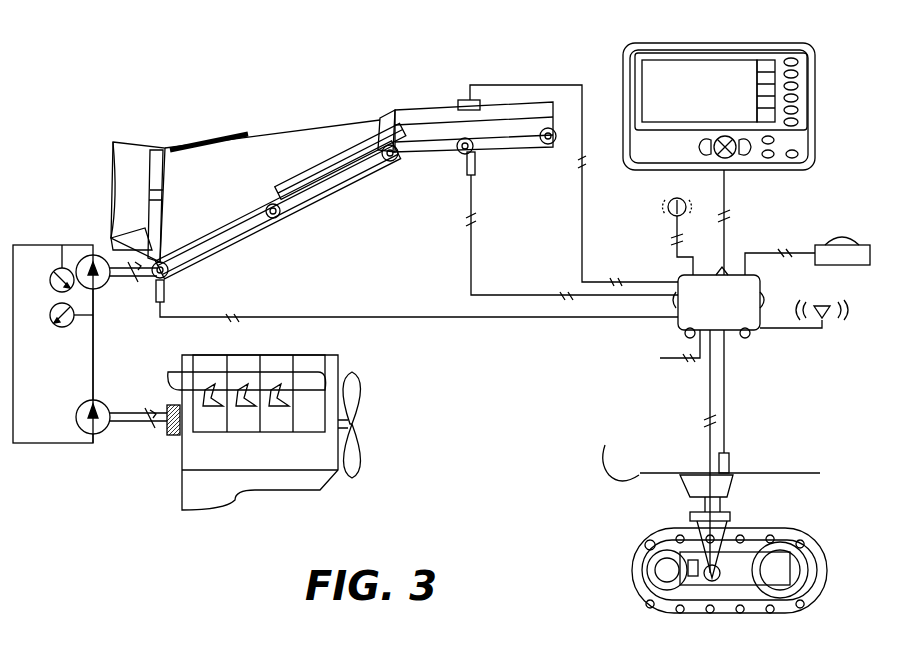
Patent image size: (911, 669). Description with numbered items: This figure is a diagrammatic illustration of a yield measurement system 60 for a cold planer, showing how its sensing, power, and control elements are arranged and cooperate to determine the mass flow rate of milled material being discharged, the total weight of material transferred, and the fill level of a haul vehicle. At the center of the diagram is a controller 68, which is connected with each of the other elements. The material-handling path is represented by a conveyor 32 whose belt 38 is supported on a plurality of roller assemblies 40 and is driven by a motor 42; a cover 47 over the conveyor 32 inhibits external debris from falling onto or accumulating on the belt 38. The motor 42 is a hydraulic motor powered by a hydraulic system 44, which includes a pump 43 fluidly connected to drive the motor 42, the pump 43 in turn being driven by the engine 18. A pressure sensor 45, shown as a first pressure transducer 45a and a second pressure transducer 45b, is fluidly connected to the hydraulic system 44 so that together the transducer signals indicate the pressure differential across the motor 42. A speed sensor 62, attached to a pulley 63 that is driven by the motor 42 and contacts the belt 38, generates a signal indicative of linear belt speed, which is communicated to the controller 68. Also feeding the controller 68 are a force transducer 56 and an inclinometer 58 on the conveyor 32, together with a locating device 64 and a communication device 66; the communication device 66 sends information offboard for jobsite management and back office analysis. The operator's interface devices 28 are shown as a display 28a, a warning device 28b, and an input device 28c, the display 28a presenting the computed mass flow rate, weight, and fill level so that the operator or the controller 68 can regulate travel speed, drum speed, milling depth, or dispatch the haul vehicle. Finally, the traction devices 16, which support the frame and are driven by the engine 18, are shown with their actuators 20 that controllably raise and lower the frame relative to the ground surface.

The traction devices 16 is at (632, 560).
The engine 18 is at (264, 432).
The actuators 20 is at (729, 524).
The interface devices 28 is at (840, 132).
The display 28a is at (345, 46).
The warning device 28b is at (668, 209).
The input device 28c is at (624, 48).
The conveyor 32 is at (384, 242).
The belt 38 is at (322, 183).
The roller assemblies 40 is at (278, 214).
The motor 42 is at (97, 292).
The pump 43 is at (96, 432).
The hydraulic system 44 is at (28, 232).
The pressure sensor 45 is at (38, 306).
The first pressure transducer 45a is at (68, 330).
The second pressure transducer 45b is at (50, 276).
The cover 47 is at (418, 110).
The force transducer 56 is at (480, 170).
The inclinometer 58 is at (459, 90).
The yield measurement system 60 is at (283, 70).
The speed sensor 62 is at (168, 296).
The pulley 63 is at (172, 274).
The locating device 64 is at (848, 238).
The communication device 66 is at (822, 335).
The controller 68 is at (670, 317).